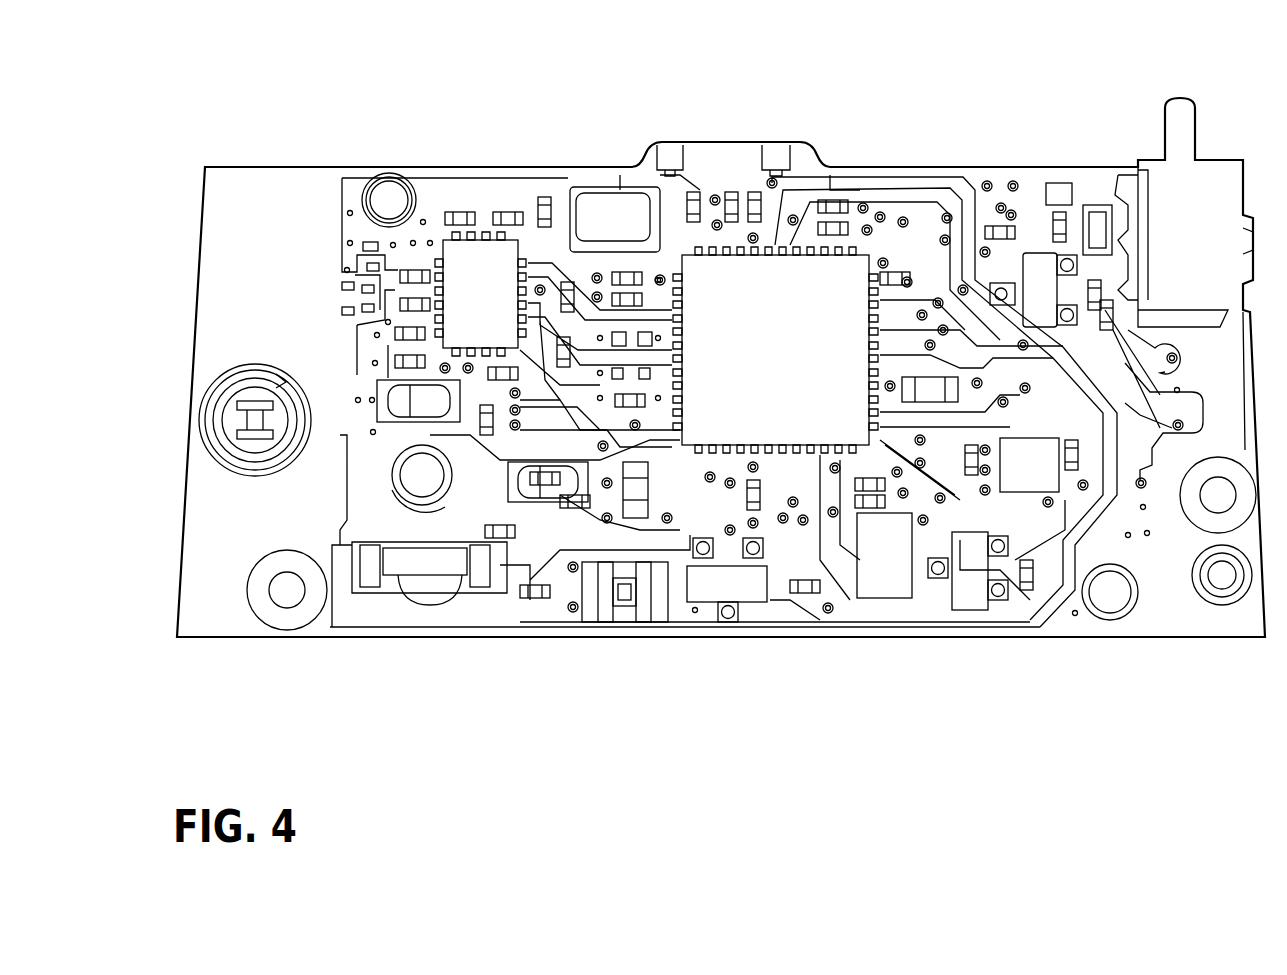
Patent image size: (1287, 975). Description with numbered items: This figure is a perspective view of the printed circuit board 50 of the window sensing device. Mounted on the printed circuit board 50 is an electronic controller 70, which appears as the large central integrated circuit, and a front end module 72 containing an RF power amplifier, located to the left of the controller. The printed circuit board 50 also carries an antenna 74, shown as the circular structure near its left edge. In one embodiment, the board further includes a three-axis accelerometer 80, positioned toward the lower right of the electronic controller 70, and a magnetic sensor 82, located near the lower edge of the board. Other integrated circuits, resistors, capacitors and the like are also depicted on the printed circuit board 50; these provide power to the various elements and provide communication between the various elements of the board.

The printed circuit board 50 is at (728, 100).
The electronic controller 70 is at (852, 278).
The front end module 72 is at (463, 252).
The antenna 74 is at (255, 442).
The 3-axis accelerometer 80 is at (1035, 482).
The magnetic sensor 82 is at (718, 586).